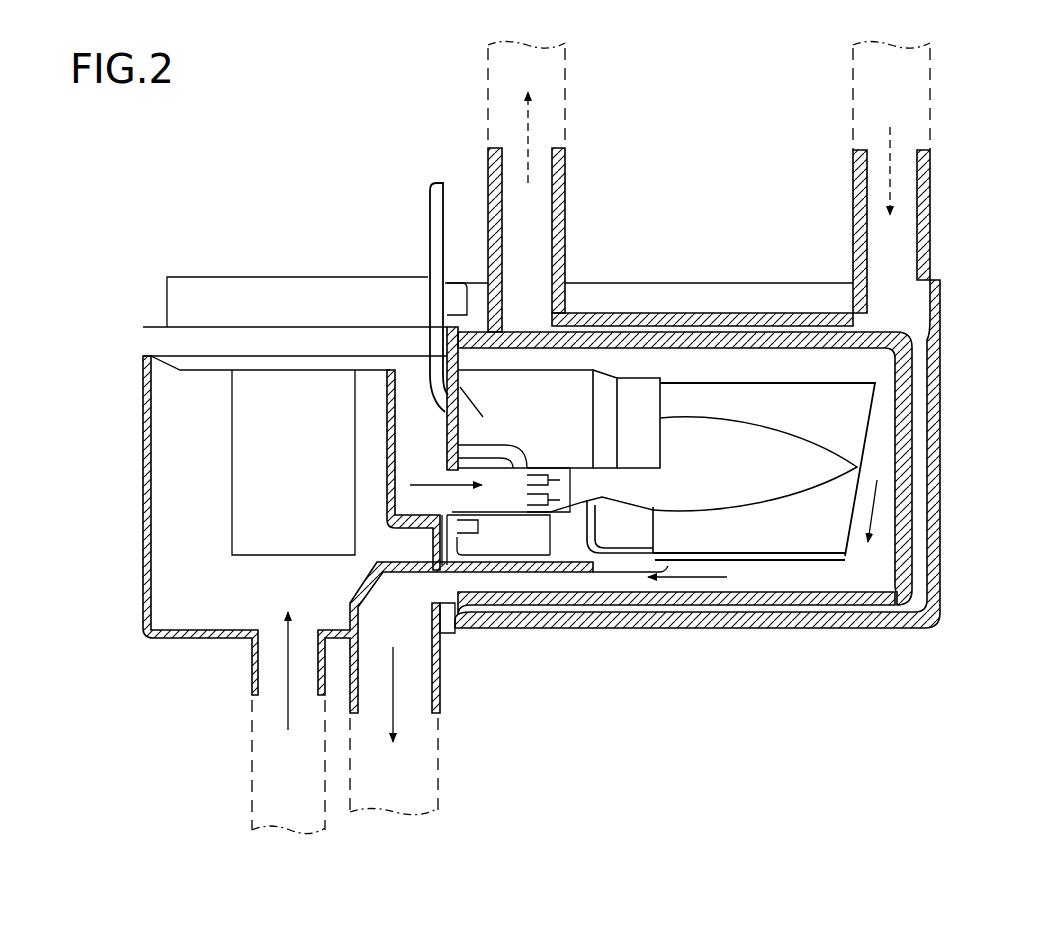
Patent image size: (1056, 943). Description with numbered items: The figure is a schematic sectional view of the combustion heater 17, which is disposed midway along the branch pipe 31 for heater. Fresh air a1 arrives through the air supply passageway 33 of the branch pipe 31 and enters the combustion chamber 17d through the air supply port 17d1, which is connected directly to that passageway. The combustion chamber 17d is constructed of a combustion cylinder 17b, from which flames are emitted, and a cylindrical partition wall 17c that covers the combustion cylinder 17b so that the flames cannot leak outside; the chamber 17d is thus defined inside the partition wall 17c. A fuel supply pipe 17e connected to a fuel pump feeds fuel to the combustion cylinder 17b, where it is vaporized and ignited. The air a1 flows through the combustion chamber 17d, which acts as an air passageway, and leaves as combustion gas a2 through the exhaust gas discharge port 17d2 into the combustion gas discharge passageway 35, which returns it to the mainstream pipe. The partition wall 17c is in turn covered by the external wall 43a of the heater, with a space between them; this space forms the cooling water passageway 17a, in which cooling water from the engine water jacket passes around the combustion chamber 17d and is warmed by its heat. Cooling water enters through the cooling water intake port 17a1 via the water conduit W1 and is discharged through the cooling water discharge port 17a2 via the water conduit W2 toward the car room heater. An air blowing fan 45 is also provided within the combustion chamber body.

The combustion heater 17 is at (716, 190).
The cooling water passageway 17a is at (717, 325).
The cooling water intake port 17a1 is at (931, 190).
The cooling water discharge port 17a2 is at (565, 178).
The combustion cylinder 17b is at (640, 385).
The cylindrical partition wall 17c is at (905, 450).
The combustion chamber 17d is at (828, 375).
The air supply port 17d1 is at (252, 648).
The exhaust gas discharge port 17d2 is at (441, 655).
The fuel supply pipe 17e is at (430, 222).
The air blowing fan 45 is at (256, 278).
The external wall 43a is at (770, 630).
The air supply passageway 33 is at (252, 785).
The branch pipe for heater 31 is at (248, 805).
The combustion gas discharge passageway 35 is at (438, 775).
The fresh air a1 is at (432, 485).
The combustion gas a2 is at (878, 508).
The water conduit W1 is at (932, 80).
The water conduit W2 is at (490, 50).